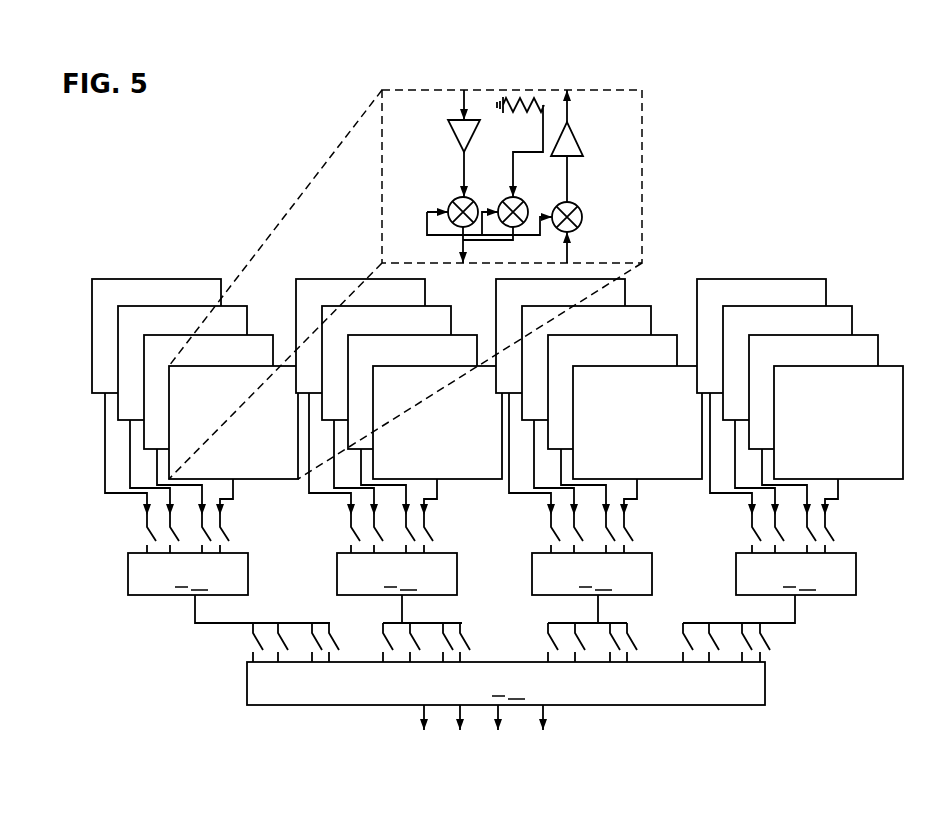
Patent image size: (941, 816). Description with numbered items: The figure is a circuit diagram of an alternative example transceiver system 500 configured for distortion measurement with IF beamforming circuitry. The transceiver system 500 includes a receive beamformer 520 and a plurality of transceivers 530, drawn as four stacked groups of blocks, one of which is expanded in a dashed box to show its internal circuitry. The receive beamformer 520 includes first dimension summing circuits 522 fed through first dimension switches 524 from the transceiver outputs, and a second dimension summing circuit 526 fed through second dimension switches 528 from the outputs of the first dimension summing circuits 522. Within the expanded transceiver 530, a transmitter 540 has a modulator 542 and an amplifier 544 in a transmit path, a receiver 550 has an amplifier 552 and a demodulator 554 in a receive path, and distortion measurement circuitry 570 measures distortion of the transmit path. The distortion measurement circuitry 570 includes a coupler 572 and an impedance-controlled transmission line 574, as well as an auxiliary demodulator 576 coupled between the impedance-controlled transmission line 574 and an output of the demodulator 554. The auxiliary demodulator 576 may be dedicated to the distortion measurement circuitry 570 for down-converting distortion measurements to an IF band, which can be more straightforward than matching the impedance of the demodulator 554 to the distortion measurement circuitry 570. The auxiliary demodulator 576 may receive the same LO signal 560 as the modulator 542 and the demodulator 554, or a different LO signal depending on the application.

The transceiver system 500 is at (97, 202).
The transceiver 530 is at (456, 288).
The receive beamformer 520 is at (433, 618).
The first dimension switches 524 is at (135, 534).
The first dimension summing circuits 522 is at (165, 598).
The second dimension switches 528 is at (242, 645).
The second dimension summing circuit 526 is at (250, 706).
The receiver 550 is at (443, 126).
The amplifier 552 is at (450, 134).
The demodulator 554 is at (452, 202).
The LO signal 560 is at (472, 235).
The distortion measurement circuitry 570 is at (504, 95).
The coupler 572 is at (541, 145).
The impedance-controlled transmission line 574 is at (511, 182).
The auxiliary demodulator 576 is at (524, 224).
The transmitter 540 is at (598, 113).
The modulator 542 is at (583, 217).
The amplifier 544 is at (576, 136).